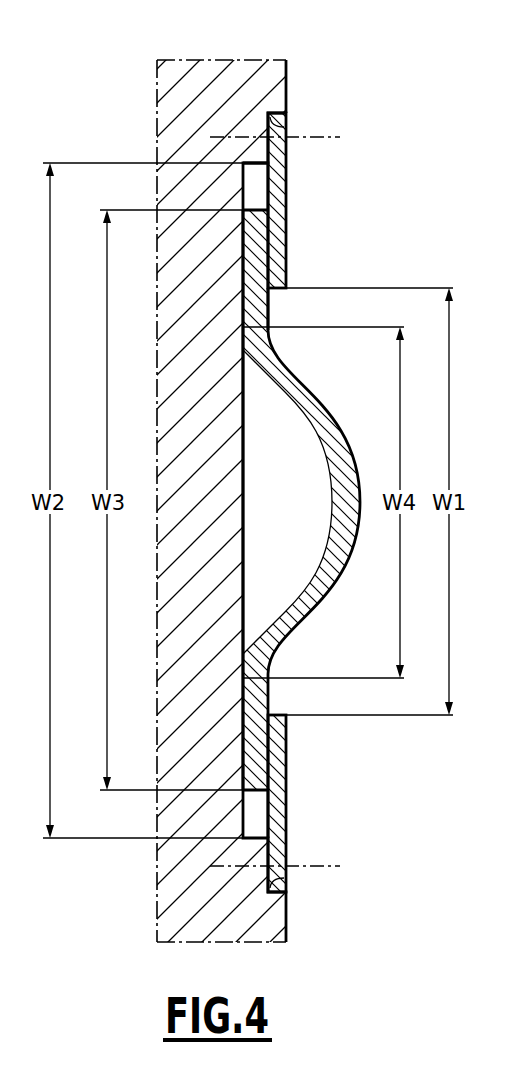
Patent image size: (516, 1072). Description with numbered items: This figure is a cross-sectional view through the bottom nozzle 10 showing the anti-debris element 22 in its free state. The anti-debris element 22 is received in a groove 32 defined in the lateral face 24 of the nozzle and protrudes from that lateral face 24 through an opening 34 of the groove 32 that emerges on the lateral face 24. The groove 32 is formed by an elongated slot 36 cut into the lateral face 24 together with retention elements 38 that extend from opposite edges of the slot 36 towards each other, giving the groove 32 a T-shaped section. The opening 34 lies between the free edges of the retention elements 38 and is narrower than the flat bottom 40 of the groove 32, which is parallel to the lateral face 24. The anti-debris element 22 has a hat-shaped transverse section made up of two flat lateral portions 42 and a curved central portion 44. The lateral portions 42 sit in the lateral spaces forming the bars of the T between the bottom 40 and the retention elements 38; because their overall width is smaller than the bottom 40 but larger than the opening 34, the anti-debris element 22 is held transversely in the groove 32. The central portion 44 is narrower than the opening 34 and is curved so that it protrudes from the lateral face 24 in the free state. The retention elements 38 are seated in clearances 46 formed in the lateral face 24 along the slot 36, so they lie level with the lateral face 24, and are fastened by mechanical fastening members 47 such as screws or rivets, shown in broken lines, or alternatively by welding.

The housing block 10 is at (216, 94).
The anti-debris element 22 is at (312, 524).
The lateral face 24 is at (288, 77).
The groove 32 is at (375, 502).
The opening 34 is at (280, 308).
The elongated slot 36 is at (253, 178).
The retention elements 38 is at (325, 503).
The bottom of the groove 40 is at (244, 521).
The flat lateral portions 42 is at (252, 263).
The curved central portion 44 is at (348, 540).
The clearances 46 is at (287, 123).
The mechanical fastening members 47 is at (303, 139).